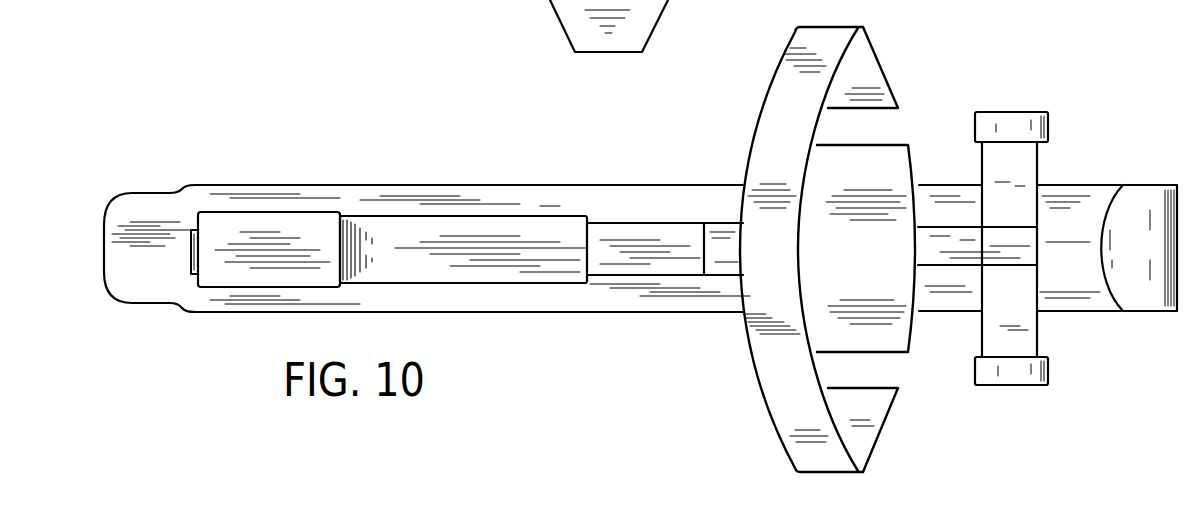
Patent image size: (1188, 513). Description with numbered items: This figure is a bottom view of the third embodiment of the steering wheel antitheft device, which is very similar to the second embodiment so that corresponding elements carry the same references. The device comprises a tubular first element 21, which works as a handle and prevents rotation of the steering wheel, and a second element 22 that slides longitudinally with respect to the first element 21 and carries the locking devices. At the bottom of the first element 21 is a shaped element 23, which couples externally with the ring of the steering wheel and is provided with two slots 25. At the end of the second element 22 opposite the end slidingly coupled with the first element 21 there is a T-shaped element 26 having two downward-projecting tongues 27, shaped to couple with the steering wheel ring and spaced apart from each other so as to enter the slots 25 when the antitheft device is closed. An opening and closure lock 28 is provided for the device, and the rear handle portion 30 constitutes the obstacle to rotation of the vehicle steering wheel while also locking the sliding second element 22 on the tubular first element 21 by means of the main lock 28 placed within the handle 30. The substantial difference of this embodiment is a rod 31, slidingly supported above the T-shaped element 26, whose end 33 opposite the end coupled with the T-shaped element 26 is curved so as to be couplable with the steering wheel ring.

The first element 21 is at (615, 236).
The second element 22 is at (928, 244).
The shaped element 23 is at (800, 42).
The slots 25 is at (884, 110).
The T-shaped element 26 is at (1025, 163).
The tongues 27 is at (1010, 120).
The opening and closure lock 28 is at (190, 258).
The rear handle portion 30 is at (286, 222).
The rod 31 is at (524, 192).
The end 33 is at (1122, 273).